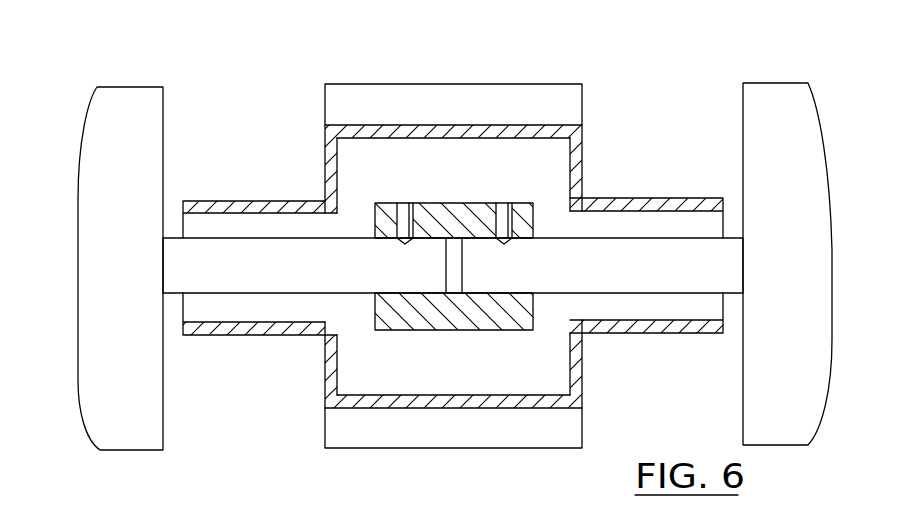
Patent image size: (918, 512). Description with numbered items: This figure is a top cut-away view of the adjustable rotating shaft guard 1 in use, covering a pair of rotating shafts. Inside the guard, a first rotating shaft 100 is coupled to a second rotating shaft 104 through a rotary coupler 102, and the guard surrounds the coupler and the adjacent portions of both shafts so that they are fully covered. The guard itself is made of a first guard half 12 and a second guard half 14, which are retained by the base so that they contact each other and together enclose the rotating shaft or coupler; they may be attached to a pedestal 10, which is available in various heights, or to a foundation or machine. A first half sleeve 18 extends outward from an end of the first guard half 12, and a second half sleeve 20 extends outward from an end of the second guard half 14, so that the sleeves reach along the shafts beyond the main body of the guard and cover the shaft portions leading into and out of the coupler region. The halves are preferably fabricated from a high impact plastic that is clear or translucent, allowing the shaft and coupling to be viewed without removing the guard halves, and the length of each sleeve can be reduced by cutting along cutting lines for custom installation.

The adjustable rotating shaft guard 1 is at (262, 413).
The pedestal 10 is at (502, 83).
The first guard half 12 is at (505, 405).
The second guard half 14 is at (531, 126).
The first half sleeve 18 is at (255, 335).
The second half sleeve 20 is at (305, 199).
The first rotating shaft 100 is at (227, 248).
The rotary coupler 102 is at (428, 203).
The second rotating shaft 104 is at (663, 245).